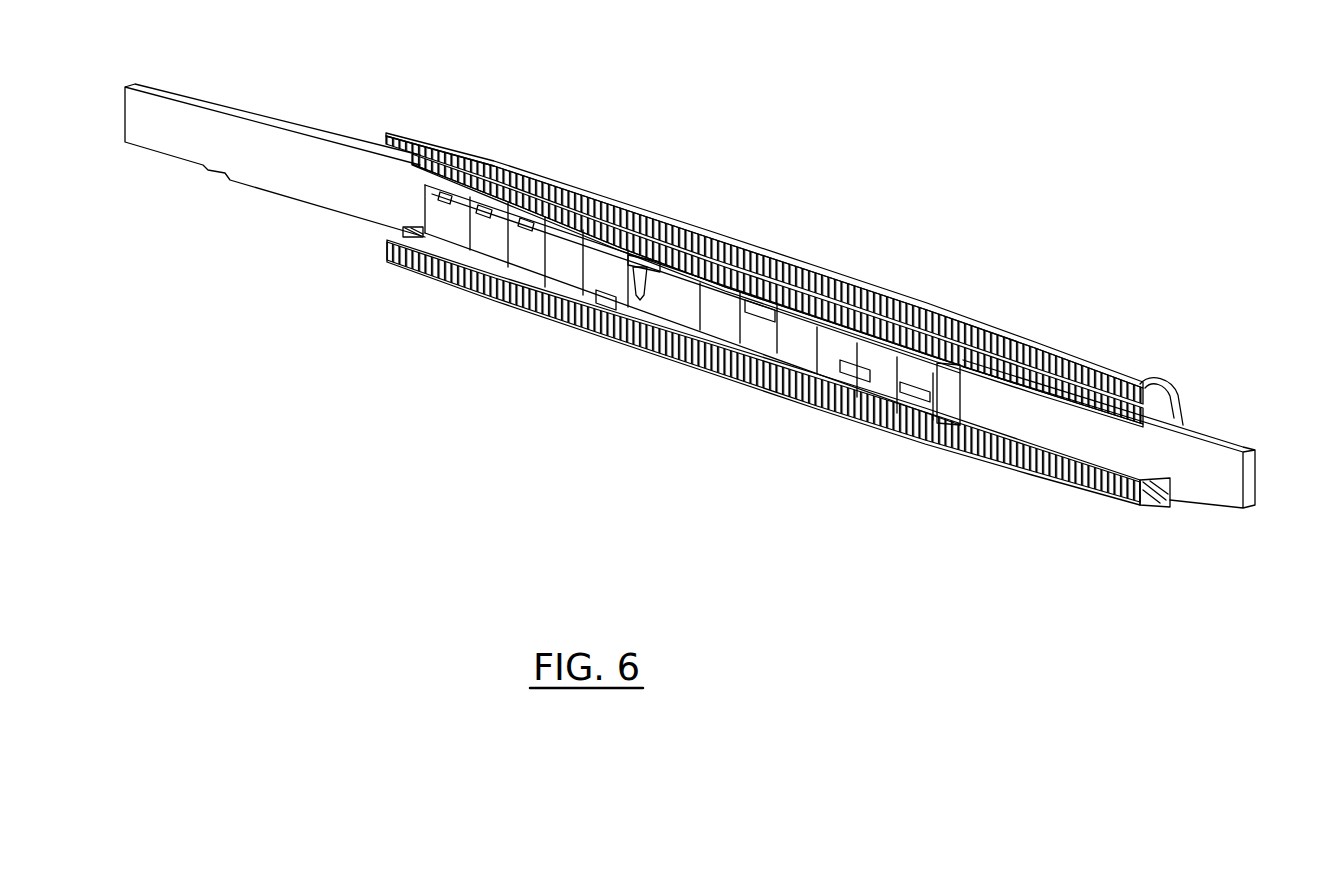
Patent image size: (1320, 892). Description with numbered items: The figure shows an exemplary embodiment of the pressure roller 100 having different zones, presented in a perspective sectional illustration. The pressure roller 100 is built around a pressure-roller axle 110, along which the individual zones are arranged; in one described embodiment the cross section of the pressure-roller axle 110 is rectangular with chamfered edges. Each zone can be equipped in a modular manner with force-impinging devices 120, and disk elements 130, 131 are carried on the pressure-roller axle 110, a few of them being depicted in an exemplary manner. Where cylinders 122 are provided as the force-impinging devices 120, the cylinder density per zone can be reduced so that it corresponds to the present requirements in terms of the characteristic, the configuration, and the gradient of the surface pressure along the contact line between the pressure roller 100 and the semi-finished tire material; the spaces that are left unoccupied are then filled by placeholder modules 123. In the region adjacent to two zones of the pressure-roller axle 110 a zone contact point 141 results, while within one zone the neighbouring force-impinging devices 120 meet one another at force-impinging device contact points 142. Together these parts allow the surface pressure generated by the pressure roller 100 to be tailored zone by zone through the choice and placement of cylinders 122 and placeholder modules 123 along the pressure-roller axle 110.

The pressure roller 100 is at (840, 202).
The pressure-roller axle 110 is at (268, 170).
The force-impinging device 120 is at (813, 345).
The cylinder 122 is at (772, 375).
The placeholder module 123 is at (913, 428).
The disk element 130 is at (1150, 383).
The lower rail 131 is at (1150, 383).
The zone contact point 141 is at (660, 343).
The force-impinging device contact point 142 is at (853, 407).